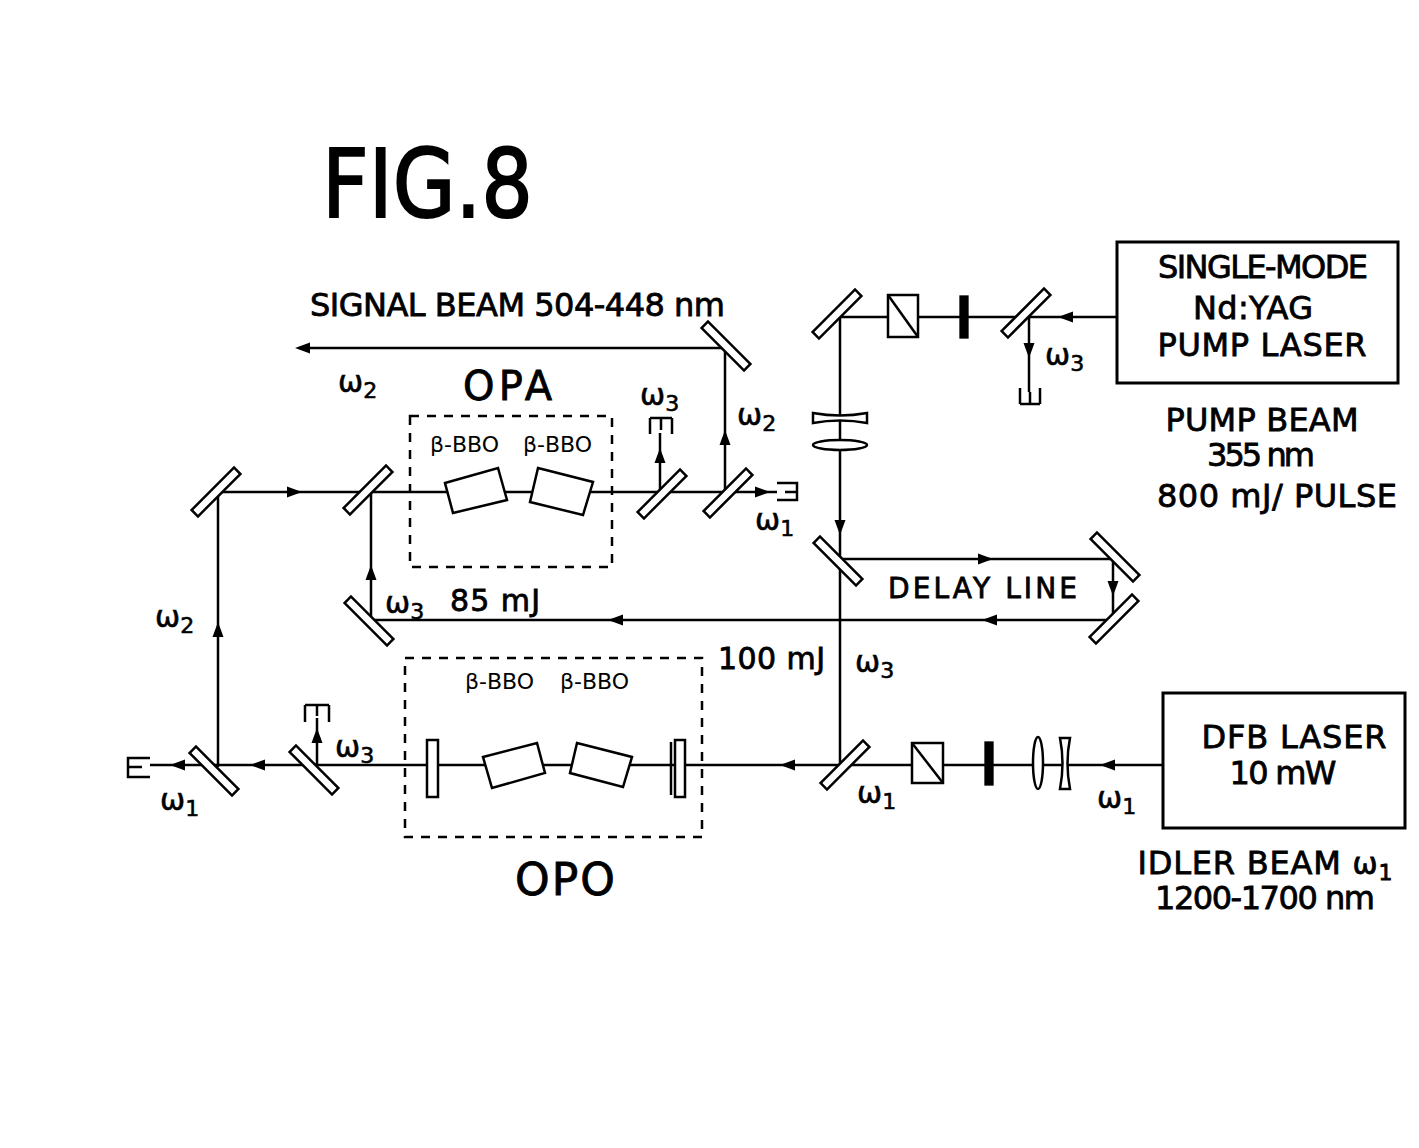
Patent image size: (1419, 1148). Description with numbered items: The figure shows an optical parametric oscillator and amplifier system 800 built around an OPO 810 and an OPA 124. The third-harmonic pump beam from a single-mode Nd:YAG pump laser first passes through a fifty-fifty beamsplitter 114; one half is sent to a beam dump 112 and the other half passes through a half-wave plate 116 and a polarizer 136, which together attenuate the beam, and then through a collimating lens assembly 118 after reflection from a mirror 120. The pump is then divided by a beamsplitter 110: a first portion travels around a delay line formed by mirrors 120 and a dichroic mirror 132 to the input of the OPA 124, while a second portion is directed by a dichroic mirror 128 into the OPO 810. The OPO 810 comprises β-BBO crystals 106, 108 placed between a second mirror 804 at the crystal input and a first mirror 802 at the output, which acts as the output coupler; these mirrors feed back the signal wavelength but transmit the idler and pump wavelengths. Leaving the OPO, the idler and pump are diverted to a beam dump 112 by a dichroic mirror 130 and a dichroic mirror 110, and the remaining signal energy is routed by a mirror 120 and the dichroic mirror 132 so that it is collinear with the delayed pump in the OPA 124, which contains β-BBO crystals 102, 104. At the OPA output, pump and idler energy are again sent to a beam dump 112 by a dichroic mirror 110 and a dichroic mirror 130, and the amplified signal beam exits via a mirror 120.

The optical parametric system 800 is at (240, 438).
The β-BBO crystal 102 is at (476, 513).
The β-BBO crystal 104 is at (561, 513).
The β-BBO crystal 106 is at (514, 790).
The β-BBO crystal 108 is at (601, 790).
The dichroic mirror 110 is at (596, 656).
The beam dump 112 is at (607, 579).
The 50/50 beamsplitter 114 is at (1027, 293).
The half-wave plate 116 is at (980, 543).
The collimating lens assembly 118 is at (947, 601).
The mirror 120 is at (670, 459).
The OPA 124 is at (565, 409).
The dichroic mirror 128 is at (846, 794).
The dichroic mirror 130 is at (471, 655).
The dichroic mirror 132 is at (366, 472).
The polarizer 136 is at (914, 519).
The first mirror 802 is at (442, 752).
The second mirror 804 is at (663, 752).
The OPO 810 is at (445, 850).